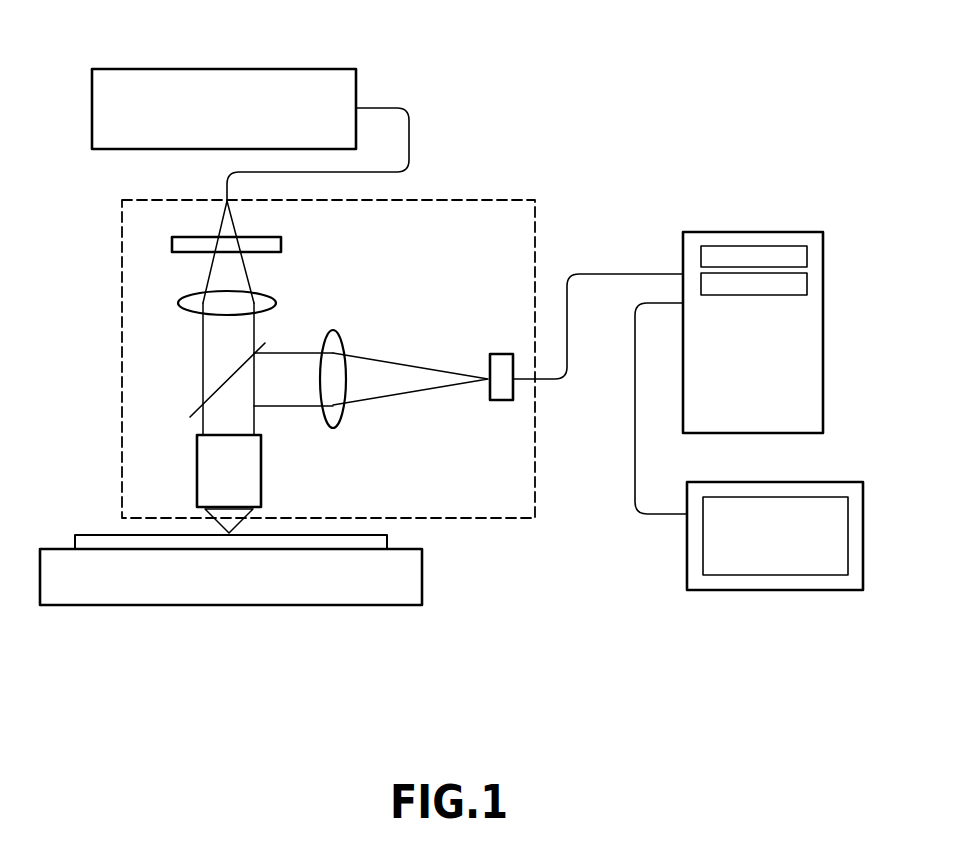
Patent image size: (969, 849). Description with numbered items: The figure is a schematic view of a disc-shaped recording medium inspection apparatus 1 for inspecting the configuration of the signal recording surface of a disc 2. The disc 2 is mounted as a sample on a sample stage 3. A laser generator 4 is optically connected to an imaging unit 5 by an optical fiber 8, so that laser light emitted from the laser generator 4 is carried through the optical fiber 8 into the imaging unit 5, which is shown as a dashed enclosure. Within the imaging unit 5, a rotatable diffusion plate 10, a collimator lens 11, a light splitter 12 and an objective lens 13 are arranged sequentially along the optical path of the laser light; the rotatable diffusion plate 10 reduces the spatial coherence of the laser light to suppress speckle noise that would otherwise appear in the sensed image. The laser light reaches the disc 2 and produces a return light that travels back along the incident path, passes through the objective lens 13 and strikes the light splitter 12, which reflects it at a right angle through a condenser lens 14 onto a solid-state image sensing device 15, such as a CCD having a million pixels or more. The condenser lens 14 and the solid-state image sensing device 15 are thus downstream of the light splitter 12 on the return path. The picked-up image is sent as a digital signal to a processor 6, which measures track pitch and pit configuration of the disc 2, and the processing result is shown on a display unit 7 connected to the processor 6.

The inspection apparatus 1 is at (636, 214).
The disc-shaped recording medium 2 is at (88, 541).
The sample stage 3 is at (422, 573).
The laser generator 4 is at (250, 69).
The imaging unit 5 is at (108, 258).
The processor 6 is at (825, 272).
The display unit 7 is at (803, 592).
The optical fiber 8 is at (410, 130).
The rotatable diffusion plate 10 is at (283, 243).
The collimator lens 11 is at (277, 302).
The light splitter 12 is at (264, 345).
The objective lens 13 is at (262, 472).
The condenser lens 14 is at (338, 415).
The solid-state image sensing device 15 is at (500, 404).